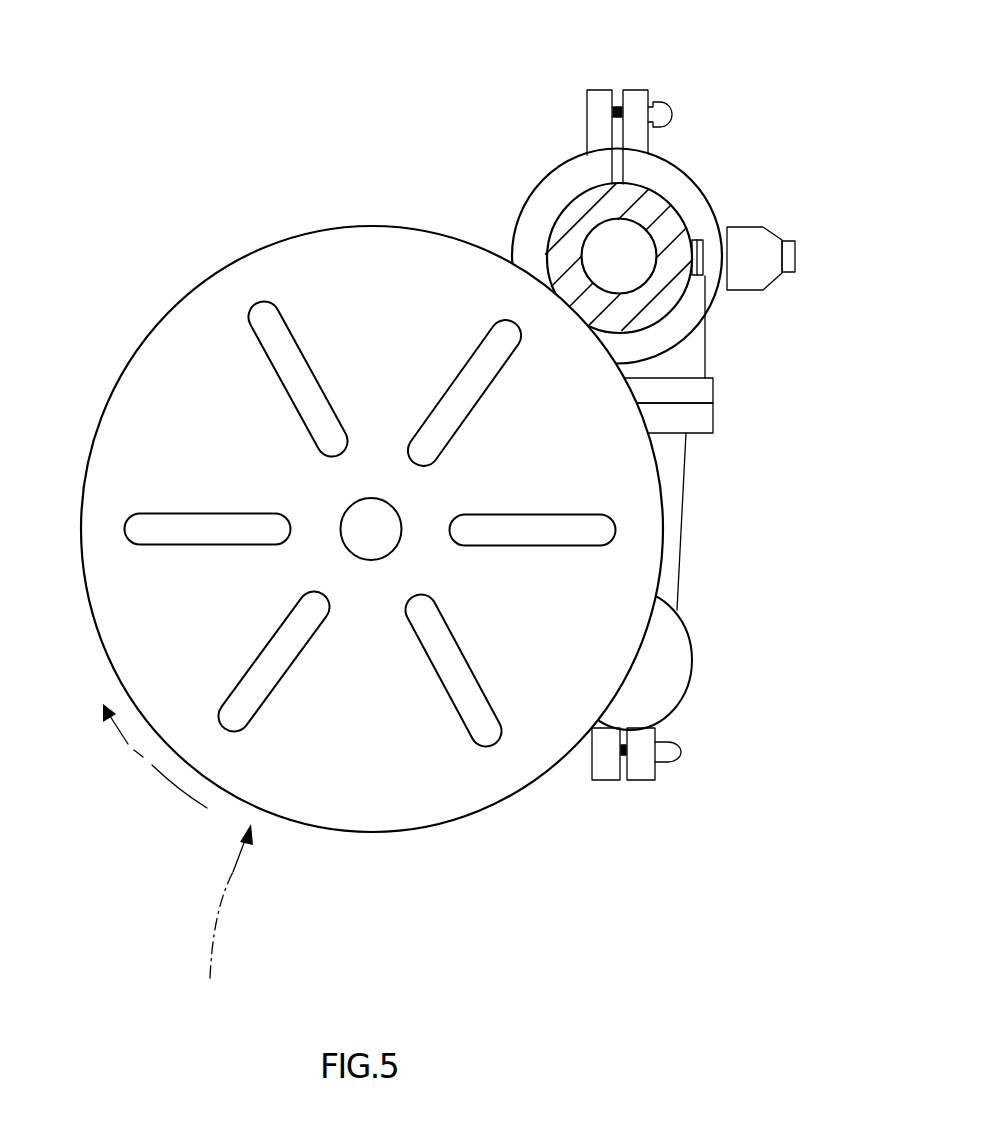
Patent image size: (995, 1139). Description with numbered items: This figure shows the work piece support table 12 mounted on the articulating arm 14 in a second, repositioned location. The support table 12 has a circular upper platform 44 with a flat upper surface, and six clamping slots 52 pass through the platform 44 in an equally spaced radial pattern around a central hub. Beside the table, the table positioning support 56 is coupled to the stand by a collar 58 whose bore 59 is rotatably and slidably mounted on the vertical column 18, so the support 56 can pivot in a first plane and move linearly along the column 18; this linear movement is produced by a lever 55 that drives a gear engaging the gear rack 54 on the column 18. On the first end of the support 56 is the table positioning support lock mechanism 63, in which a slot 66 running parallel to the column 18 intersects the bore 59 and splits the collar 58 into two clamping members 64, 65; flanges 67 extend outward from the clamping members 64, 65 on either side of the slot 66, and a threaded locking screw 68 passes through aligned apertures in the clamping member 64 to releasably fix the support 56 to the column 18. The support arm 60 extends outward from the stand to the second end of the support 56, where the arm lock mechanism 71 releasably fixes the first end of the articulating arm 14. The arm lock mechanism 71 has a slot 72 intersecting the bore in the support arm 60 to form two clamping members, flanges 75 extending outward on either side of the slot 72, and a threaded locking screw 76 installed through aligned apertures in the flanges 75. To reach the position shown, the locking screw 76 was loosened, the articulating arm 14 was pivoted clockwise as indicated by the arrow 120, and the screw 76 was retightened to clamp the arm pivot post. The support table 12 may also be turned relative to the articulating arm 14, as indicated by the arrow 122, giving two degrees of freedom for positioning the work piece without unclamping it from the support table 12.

The work piece support table 12 is at (152, 334).
The articulating arm 14 is at (689, 624).
The column 18 is at (692, 212).
The upper platform 44 is at (262, 250).
The clamping slots 52 is at (140, 522).
The gear rack 54 is at (703, 277).
The lever 55 is at (797, 258).
The table positioning support 56 is at (778, 269).
The collar 58 is at (668, 229).
The bore 59 is at (711, 336).
The support arm 60 is at (683, 497).
The table positioning support lock mechanism 63 is at (641, 191).
The clamping member 64 is at (668, 172).
The clamping member 65 is at (521, 215).
The slot 66 is at (617, 92).
The flanges 67 is at (588, 92).
The threaded locking screw 68 is at (669, 104).
The arm lock mechanism 71 is at (651, 799).
The slot 72 is at (623, 782).
The flanges 75 is at (650, 775).
The threaded locking screw 76 is at (680, 748).
The arrow 120 is at (222, 937).
The arrow 122 is at (127, 748).